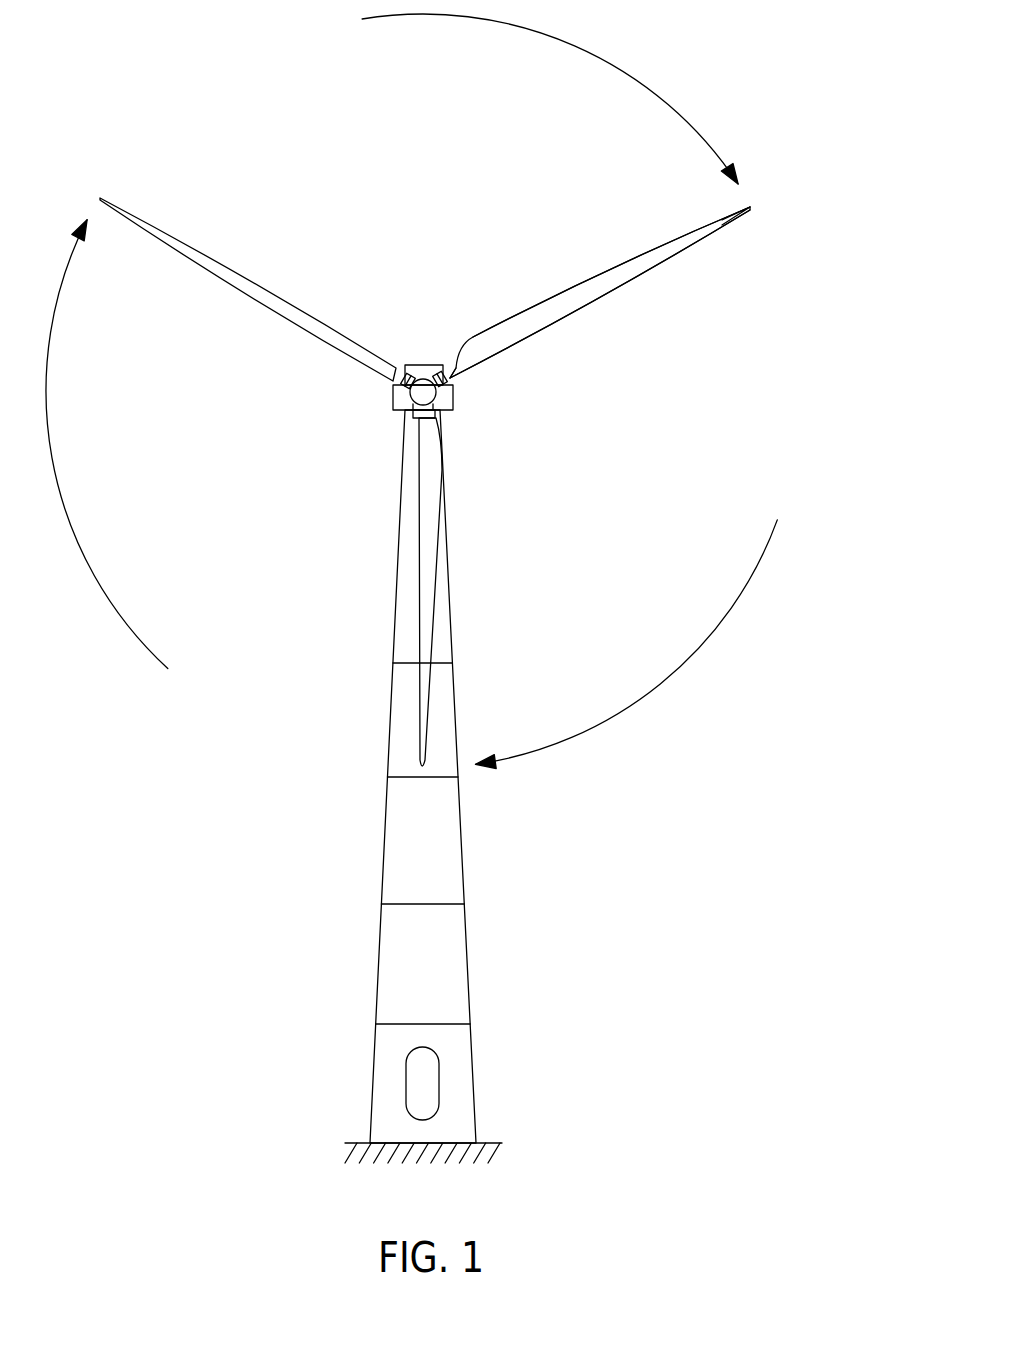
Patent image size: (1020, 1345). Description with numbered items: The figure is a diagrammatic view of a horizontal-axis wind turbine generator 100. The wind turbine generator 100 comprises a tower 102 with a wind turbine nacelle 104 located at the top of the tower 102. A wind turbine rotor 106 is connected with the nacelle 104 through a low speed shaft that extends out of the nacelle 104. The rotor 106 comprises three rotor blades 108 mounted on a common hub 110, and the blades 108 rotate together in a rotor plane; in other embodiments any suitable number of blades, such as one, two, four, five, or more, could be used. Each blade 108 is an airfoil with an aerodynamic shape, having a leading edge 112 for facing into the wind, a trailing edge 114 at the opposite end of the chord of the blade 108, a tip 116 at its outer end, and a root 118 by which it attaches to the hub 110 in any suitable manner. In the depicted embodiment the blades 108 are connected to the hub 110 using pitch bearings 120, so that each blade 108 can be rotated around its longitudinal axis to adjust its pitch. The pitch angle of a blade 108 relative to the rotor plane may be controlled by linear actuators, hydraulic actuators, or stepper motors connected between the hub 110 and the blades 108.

The wind turbine generator 100 is at (362, 972).
The tower 102 is at (443, 850).
The wind turbine nacelle 104 is at (450, 414).
The wind turbine rotor 106 is at (500, 448).
The rotor blades 108 is at (205, 273).
The hub 110 is at (425, 392).
The leading edge 112 is at (625, 283).
The trailing edge 114 is at (635, 258).
The tip 116 is at (758, 195).
The root 118 is at (468, 387).
The pitch bearings 120 is at (398, 377).